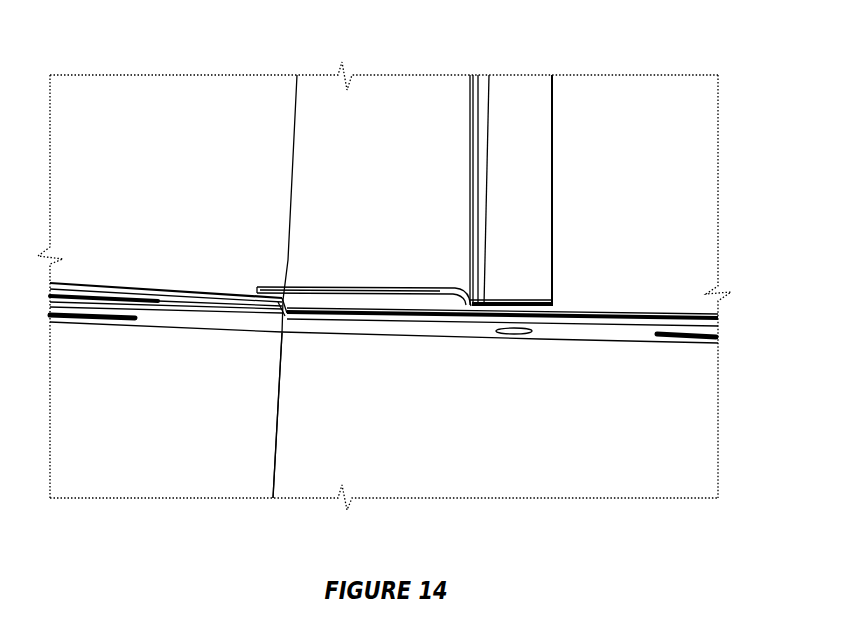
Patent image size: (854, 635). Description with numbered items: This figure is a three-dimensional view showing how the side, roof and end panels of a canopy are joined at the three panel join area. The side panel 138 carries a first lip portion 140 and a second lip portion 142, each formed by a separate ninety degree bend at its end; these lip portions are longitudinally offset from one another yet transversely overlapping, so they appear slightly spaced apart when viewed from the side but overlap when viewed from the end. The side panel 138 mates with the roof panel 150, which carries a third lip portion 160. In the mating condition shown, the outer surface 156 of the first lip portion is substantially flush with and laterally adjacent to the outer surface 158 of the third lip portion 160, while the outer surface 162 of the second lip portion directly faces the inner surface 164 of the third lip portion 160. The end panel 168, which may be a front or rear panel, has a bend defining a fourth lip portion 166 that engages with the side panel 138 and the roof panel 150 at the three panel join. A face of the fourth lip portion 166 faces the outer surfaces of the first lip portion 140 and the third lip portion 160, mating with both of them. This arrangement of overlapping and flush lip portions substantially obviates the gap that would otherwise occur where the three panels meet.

The side panel 138 is at (238, 117).
The first lip portion 140 is at (157, 282).
The second lip portion 142 is at (413, 278).
The roof panel 150 is at (585, 122).
The outer surface of the first lip portion 156 is at (210, 295).
The outer surface of the third lip portion 158 is at (318, 288).
The third lip portion 160 is at (633, 303).
The outer surface of the second lip portion 162 is at (378, 288).
The inner surface of the third lip portion 164 is at (446, 292).
The fourth lip portion 166 is at (370, 320).
The end panel 168 is at (218, 403).